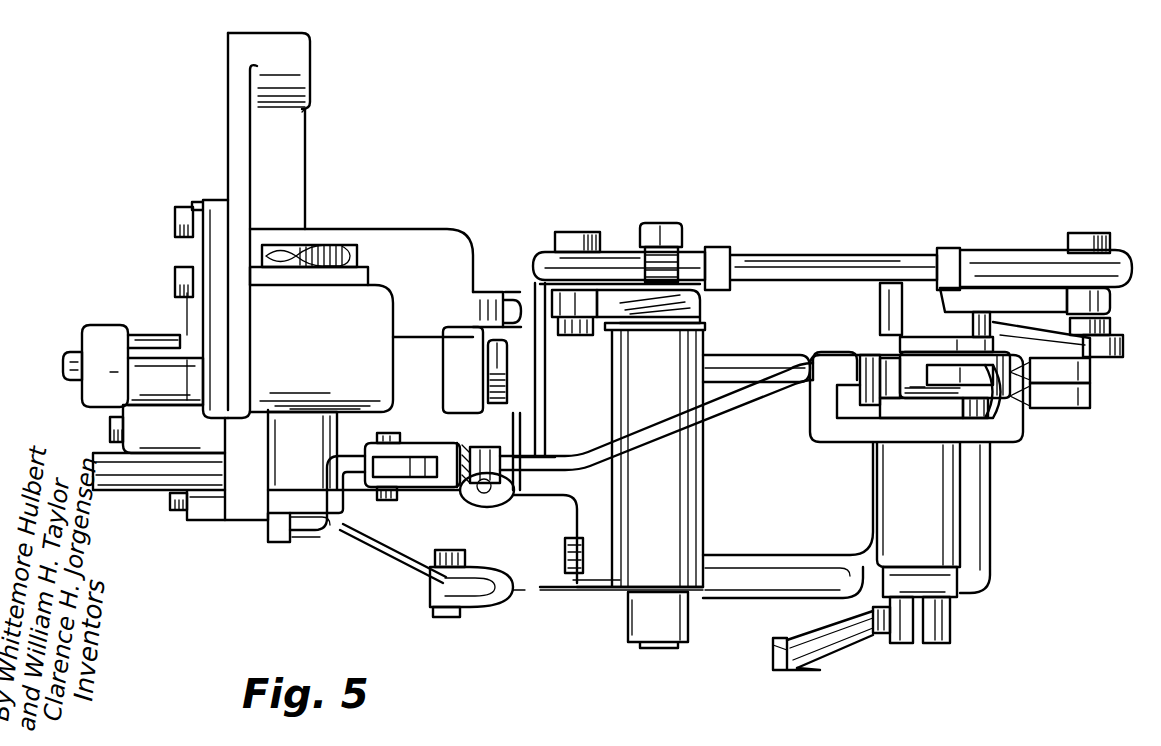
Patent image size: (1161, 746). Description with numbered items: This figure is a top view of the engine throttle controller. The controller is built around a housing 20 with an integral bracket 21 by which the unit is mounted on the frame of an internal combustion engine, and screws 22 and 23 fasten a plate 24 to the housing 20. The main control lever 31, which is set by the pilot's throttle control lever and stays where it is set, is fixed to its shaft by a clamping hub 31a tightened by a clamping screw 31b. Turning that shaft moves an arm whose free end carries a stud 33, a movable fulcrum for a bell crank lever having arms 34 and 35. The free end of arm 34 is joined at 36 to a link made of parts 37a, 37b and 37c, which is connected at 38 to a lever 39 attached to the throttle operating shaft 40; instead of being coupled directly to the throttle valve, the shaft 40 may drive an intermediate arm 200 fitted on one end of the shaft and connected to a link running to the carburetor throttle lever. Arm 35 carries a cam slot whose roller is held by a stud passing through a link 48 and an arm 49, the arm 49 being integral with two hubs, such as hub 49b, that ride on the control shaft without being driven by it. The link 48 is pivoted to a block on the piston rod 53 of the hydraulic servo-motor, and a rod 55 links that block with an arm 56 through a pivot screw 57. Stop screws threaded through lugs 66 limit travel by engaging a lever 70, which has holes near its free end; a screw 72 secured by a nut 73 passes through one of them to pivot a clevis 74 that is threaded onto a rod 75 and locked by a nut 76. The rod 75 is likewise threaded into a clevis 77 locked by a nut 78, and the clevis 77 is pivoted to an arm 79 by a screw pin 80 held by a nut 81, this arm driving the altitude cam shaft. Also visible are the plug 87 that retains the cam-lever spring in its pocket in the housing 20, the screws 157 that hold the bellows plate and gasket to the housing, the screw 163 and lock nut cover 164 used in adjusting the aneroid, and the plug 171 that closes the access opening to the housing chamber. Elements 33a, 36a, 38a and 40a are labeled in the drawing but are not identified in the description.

The housing 20 is at (397, 229).
The bracket 21 is at (310, 80).
The screw 22 is at (110, 428).
The screw 23 is at (170, 503).
The plate 24 is at (210, 200).
The main control lever 31 is at (848, 646).
The clamping hub 31a is at (932, 643).
The clamping screw 31b is at (873, 615).
The stud 33 is at (922, 337).
The plate 33a is at (880, 300).
The arm 34 is at (1110, 305).
The arm 35 is at (1124, 345).
The connection 36 is at (1103, 233).
The nut 36a is at (1110, 325).
The link part 37a is at (1016, 253).
The link part 37b is at (770, 257).
The link part 37c is at (608, 252).
The connection 38 is at (580, 233).
The bracket 38a is at (600, 335).
The lever 39 is at (568, 325).
The shaft 40 is at (662, 648).
The cylinder 40a is at (705, 517).
The link 48 is at (1090, 372).
The arm 49 is at (972, 510).
The hub 49b is at (905, 400).
The piston rod 53 is at (744, 355).
The rod 55 is at (770, 592).
The arm 56 is at (392, 567).
The pivot screw 57 is at (445, 617).
The lug 66 is at (831, 352).
The lever 70 is at (1010, 418).
The screw 72 is at (973, 333).
The nut 73 is at (985, 400).
The clevis 74 is at (935, 418).
The rod 75 is at (708, 418).
The nut 76 is at (867, 355).
The clevis 77 is at (440, 480).
The nut 78 is at (487, 497).
The arm 79 is at (310, 528).
The screw pin 80 is at (392, 433).
The nut 81 is at (390, 500).
The plug 87 is at (508, 387).
The screw 157 is at (515, 297).
The screw 163 is at (63, 368).
The lock nut cover 164 is at (100, 325).
The plug 171 is at (322, 248).
The intermediate arm 200 is at (628, 630).